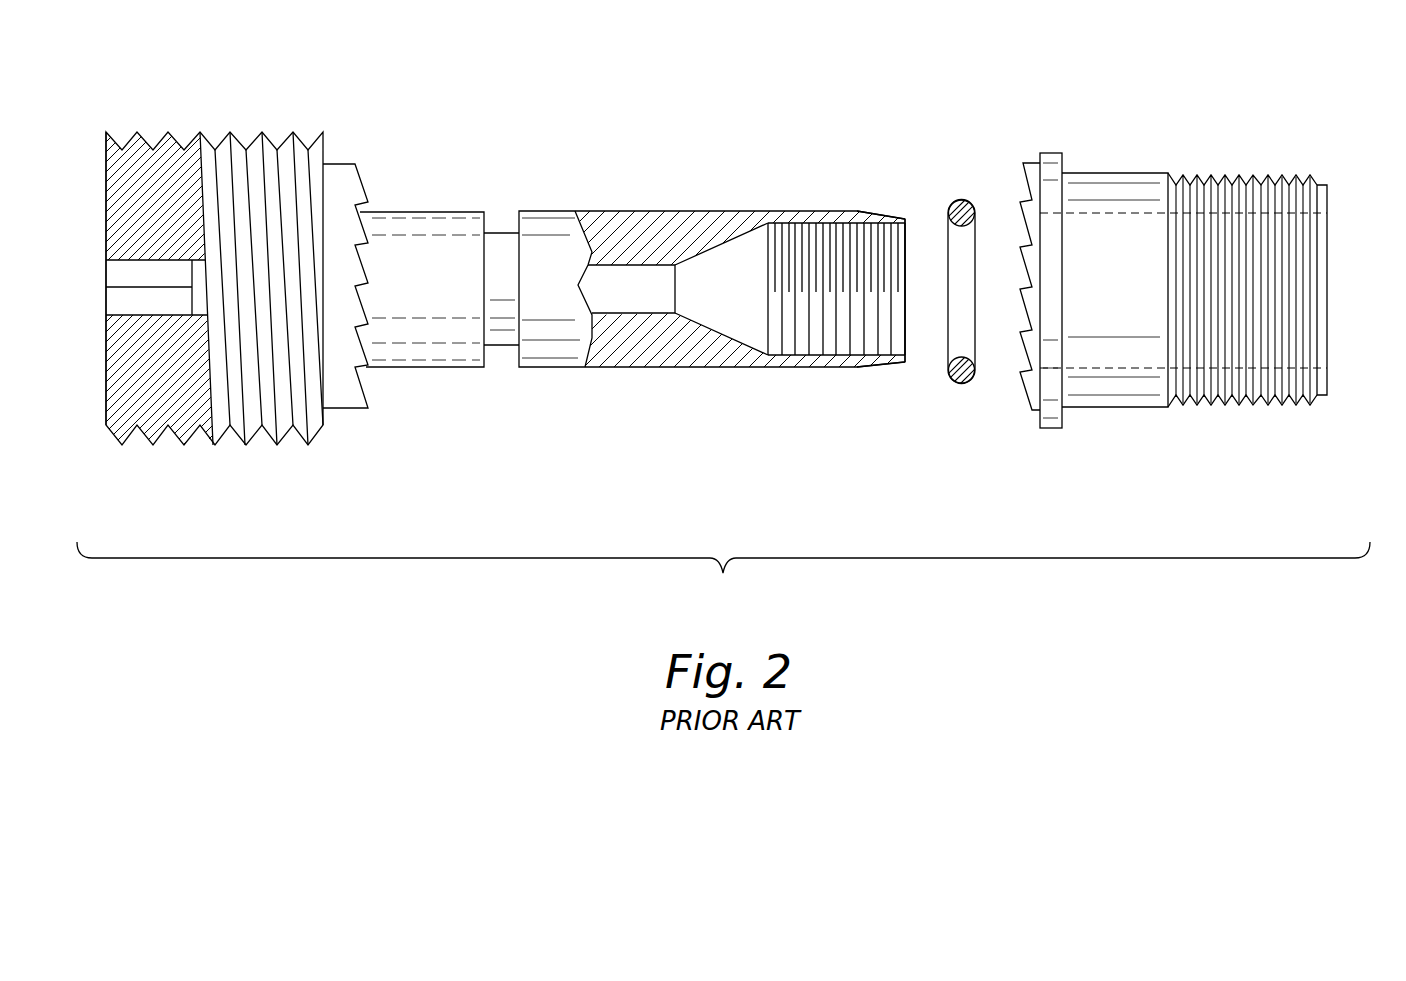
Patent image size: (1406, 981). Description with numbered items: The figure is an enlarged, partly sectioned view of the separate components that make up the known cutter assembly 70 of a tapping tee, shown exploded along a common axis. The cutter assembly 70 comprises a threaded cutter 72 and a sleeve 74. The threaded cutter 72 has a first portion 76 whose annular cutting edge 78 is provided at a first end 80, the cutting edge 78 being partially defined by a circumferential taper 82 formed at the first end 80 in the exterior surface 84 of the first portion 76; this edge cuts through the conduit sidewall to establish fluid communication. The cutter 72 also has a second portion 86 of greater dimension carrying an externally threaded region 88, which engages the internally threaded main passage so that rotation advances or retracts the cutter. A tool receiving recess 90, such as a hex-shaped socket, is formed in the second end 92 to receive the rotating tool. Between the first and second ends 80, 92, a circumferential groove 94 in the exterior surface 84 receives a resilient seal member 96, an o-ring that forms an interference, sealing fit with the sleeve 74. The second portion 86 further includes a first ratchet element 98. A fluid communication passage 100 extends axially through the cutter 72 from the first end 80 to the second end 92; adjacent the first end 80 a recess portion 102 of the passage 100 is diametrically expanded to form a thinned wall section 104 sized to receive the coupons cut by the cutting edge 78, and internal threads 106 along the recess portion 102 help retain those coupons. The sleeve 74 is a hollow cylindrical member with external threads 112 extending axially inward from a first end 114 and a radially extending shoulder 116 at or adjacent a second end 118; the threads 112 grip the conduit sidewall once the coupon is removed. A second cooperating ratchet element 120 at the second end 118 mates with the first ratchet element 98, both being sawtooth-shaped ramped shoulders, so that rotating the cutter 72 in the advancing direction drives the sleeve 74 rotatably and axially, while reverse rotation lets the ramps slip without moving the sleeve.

The cutter assembly 70 is at (723, 574).
The threaded cutter 72 is at (567, 197).
The sleeve 74 is at (1181, 258).
The first portion 76 is at (737, 275).
The annular cutting edge 78 is at (920, 218).
The first end 80 is at (907, 357).
The circumferential taper 82 is at (906, 218).
The exterior surface 84 is at (713, 367).
The second portion 86 is at (209, 283).
The externally threaded region 88 is at (232, 447).
The tool receiving recess 90 is at (125, 300).
The second end 92 is at (106, 212).
The circumferential groove 94 is at (503, 347).
The resilient seal member 96 is at (965, 200).
The first ratchet element 98 is at (363, 228).
The fluid communication passage 100 is at (615, 297).
The recess portion 102 is at (713, 290).
The thinned wall section 104 is at (830, 222).
The internal threads 106 is at (832, 340).
The external threads 112 is at (1280, 402).
The first end 114 is at (1330, 248).
The radially extending shoulder 116 is at (1062, 412).
The second end 118 is at (1032, 396).
The second cooperating ratchet element 120 is at (1023, 210).